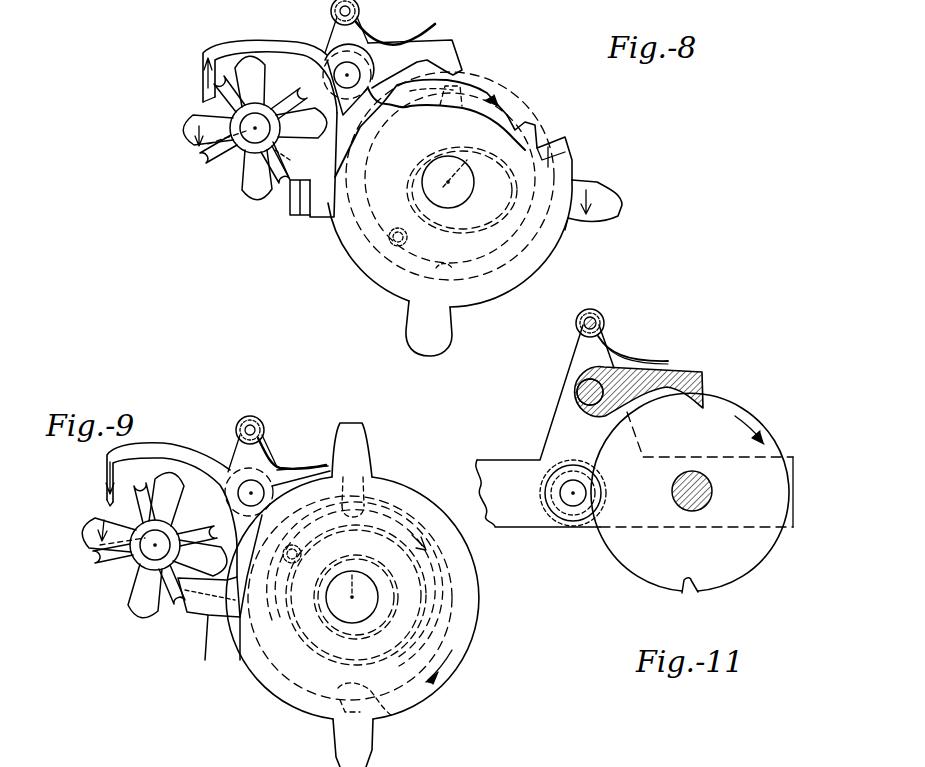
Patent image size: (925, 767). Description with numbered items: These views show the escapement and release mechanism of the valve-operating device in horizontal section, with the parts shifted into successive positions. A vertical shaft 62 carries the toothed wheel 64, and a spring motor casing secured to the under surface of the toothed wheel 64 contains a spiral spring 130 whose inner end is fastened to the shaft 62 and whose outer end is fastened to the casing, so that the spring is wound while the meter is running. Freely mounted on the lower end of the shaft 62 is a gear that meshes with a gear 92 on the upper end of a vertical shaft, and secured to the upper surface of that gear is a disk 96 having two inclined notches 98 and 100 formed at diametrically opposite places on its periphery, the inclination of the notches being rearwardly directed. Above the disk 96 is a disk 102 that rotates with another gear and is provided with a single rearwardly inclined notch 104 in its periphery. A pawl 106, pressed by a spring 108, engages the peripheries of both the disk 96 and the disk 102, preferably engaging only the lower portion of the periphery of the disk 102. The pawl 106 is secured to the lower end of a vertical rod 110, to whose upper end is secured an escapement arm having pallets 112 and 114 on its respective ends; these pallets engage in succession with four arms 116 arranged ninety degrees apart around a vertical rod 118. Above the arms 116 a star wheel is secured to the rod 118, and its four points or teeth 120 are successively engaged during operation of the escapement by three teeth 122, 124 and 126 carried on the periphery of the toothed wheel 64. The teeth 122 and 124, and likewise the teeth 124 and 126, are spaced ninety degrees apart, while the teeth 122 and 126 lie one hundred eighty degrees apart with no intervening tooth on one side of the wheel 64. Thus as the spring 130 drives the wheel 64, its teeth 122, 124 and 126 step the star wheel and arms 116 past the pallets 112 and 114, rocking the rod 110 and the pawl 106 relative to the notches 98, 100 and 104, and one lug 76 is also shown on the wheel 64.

In FIG. 8, the shaft 62 is at (463, 185).
In FIG. 9, the shaft 62 is at (368, 604).
In FIG. 11, the shaft 62 is at (707, 502).
In FIG. 8, the toothed wheel 64 is at (368, 262).
In FIG. 9, the toothed wheel 64 is at (292, 695).
In FIG. 8, the lug 76 is at (567, 228).
In FIG. 9, the lug 76 is at (372, 735).
In FIG. 11, the gear 92 is at (570, 527).
In FIG. 11, the disk 96 is at (650, 575).
In FIG. 8, the inclined notch 98 is at (455, 95).
In FIG. 9, the inclined notch 98 is at (345, 505).
In FIG. 11, the inclined notch 98 is at (700, 372).
In FIG. 8, the inclined notch 100 is at (447, 267).
In FIG. 9, the inclined notch 100 is at (345, 683).
In FIG. 11, the inclined notch 100 is at (690, 593).
In FIG. 8, the disk 102 is at (488, 96).
In FIG. 8, the inclined notch 104 is at (517, 128).
In FIG. 8, the pawl 106 is at (447, 48).
In FIG. 9, the pawl 106 is at (295, 483).
In FIG. 11, the pawl 106 is at (703, 382).
In FIG. 8, the spring 108 is at (388, 42).
In FIG. 9, the spring 108 is at (277, 465).
In FIG. 11, the spring 108 is at (633, 362).
In FIG. 8, the vertical rod 110 is at (342, 70).
In FIG. 9, the vertical rod 110 is at (247, 490).
In FIG. 8, the pallet 112 is at (201, 96).
In FIG. 9, the pallet 112 is at (107, 498).
In FIG. 8, the pallet 114 is at (300, 216).
In FIG. 9, the pallet 114 is at (190, 617).
In FIG. 8, the arms 116 is at (213, 118).
In FIG. 9, the arms 116 is at (148, 552).
In FIG. 8, the vertical rod 118 is at (256, 150).
In FIG. 9, the vertical rod 118 is at (152, 550).
In FIG. 8, the points or teeth 120 is at (192, 146).
In FIG. 9, the points or teeth 120 is at (85, 530).
In FIG. 8, the tooth 122 is at (315, 219).
In FIG. 9, the tooth 122 is at (362, 442).
In FIG. 8, the tooth 124 is at (440, 337).
In FIG. 9, the tooth 124 is at (222, 645).
In FIG. 8, the tooth 126 is at (615, 210).
In FIG. 8, the spiral spring 130 is at (520, 172).
In FIG. 9, the spiral spring 130 is at (423, 583).